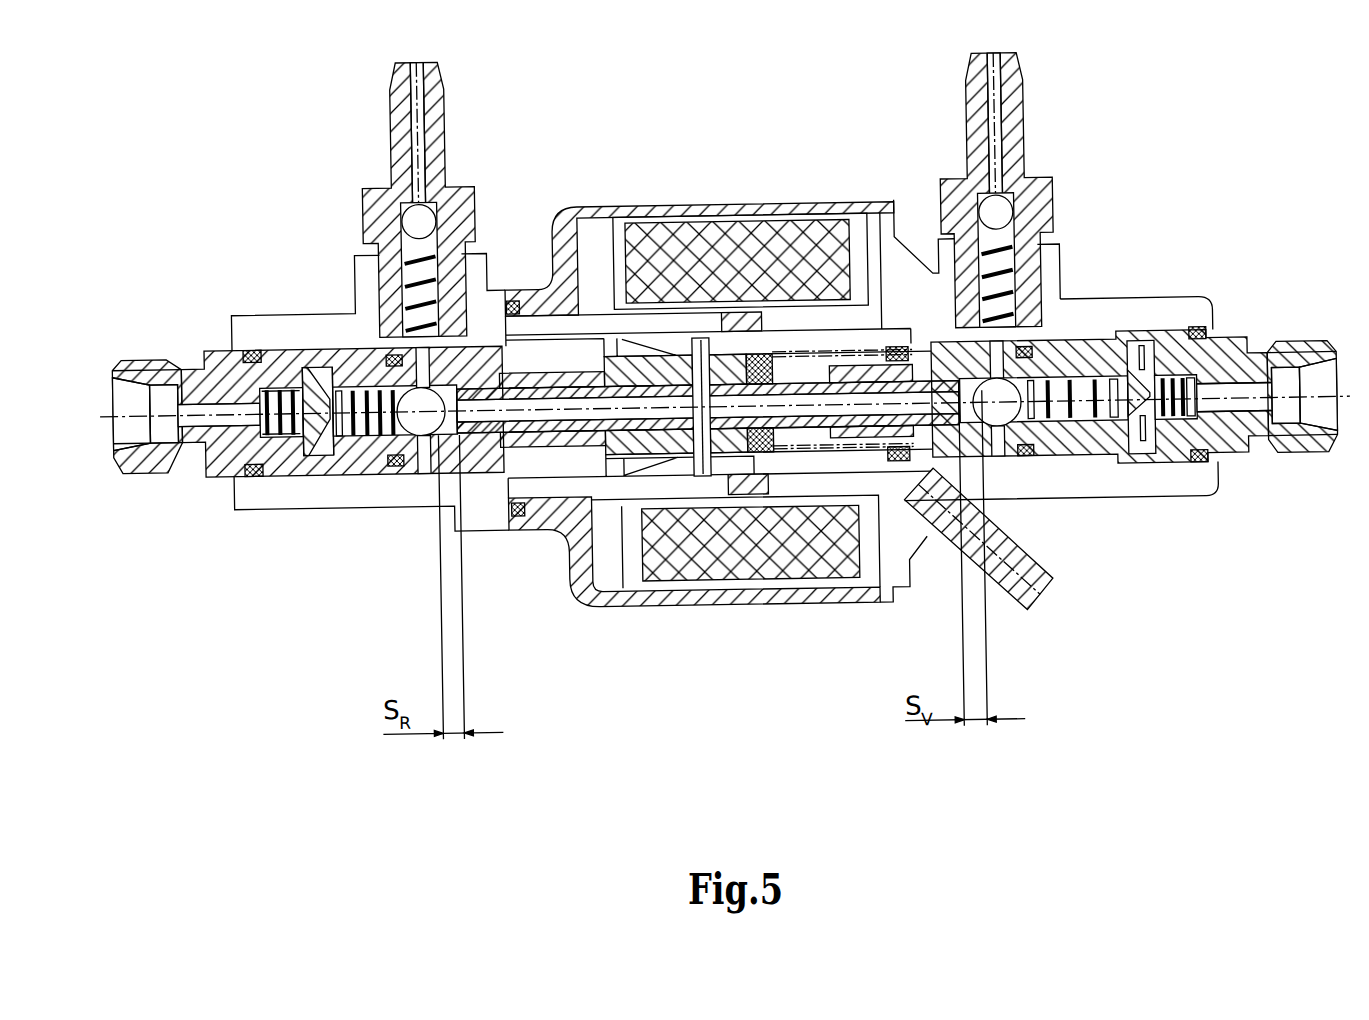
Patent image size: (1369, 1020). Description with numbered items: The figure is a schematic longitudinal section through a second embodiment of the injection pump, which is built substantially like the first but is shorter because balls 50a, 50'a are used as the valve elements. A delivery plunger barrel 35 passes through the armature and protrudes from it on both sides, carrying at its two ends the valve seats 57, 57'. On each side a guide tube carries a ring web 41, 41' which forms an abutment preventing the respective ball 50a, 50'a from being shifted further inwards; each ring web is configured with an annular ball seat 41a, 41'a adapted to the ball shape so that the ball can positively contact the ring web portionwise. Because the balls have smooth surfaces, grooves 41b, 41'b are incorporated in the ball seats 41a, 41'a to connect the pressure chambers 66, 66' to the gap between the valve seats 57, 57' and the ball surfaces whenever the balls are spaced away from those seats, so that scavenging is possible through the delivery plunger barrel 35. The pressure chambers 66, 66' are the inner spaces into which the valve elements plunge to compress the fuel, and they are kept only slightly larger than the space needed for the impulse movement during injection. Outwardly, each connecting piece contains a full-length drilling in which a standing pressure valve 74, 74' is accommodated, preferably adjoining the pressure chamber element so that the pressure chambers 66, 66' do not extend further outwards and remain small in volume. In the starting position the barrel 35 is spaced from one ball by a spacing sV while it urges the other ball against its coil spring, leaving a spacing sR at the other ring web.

The delivery plunger barrel 35 is at (660, 421).
The ring web 41 is at (927, 214).
The annular ball seat 41a is at (976, 350).
The groove 41b is at (978, 363).
The ring web 41' is at (494, 198).
The annular ball seat 41'a is at (458, 214).
The groove 41'b is at (487, 212).
The ball 50a is at (1003, 407).
The ball 50'a is at (369, 560).
The valve seat 57 is at (916, 574).
The valve seat 57' is at (528, 582).
The pressure chamber 66 is at (1093, 240).
The pressure chamber 66' is at (236, 257).
The standing pressure valve 74 is at (1203, 530).
The standing pressure valve 74' is at (257, 551).